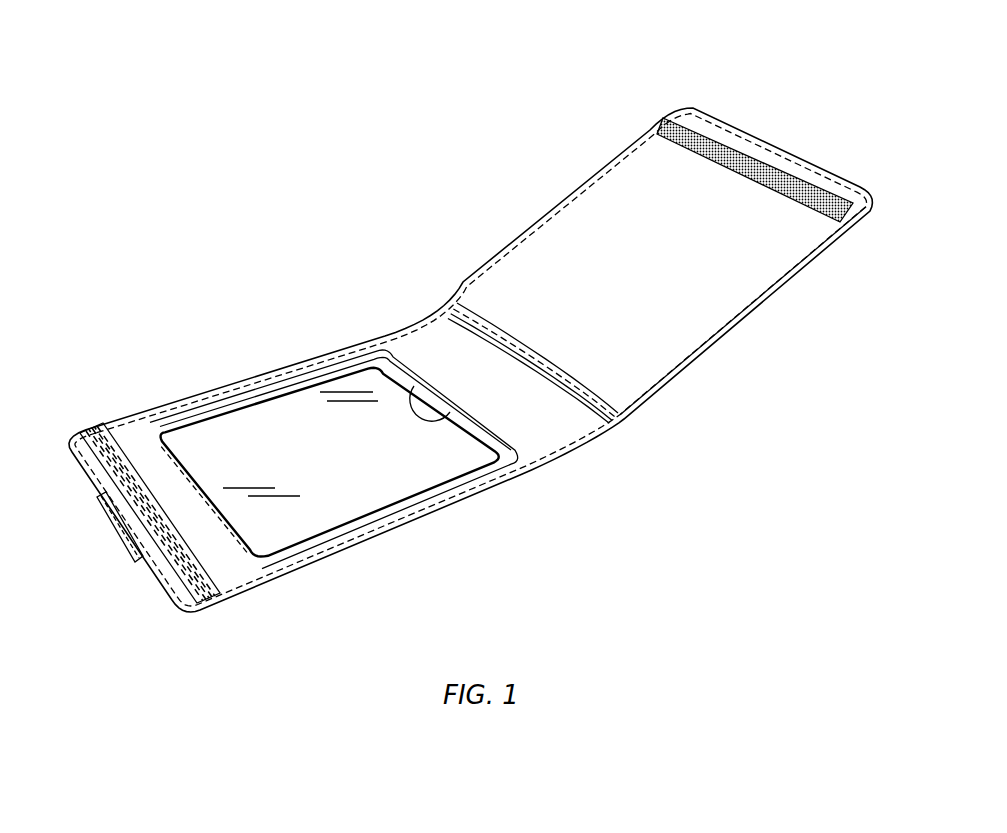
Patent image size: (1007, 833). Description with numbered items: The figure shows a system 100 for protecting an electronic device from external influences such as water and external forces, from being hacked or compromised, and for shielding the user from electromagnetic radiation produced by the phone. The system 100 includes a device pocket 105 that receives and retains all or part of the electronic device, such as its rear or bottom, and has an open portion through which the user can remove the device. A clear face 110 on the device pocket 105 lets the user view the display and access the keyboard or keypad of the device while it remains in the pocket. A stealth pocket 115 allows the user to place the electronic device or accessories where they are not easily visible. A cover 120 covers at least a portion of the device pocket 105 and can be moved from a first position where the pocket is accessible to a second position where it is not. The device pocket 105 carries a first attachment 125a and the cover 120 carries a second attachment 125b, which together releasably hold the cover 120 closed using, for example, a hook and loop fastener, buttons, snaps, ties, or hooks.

The system 100 is at (246, 124).
The device pocket 105 is at (275, 438).
The clear face 110 is at (397, 472).
The stealth pocket 115 is at (456, 296).
The cover 120 is at (565, 238).
The first attachment 125a is at (170, 550).
The second attachment 125b is at (697, 133).